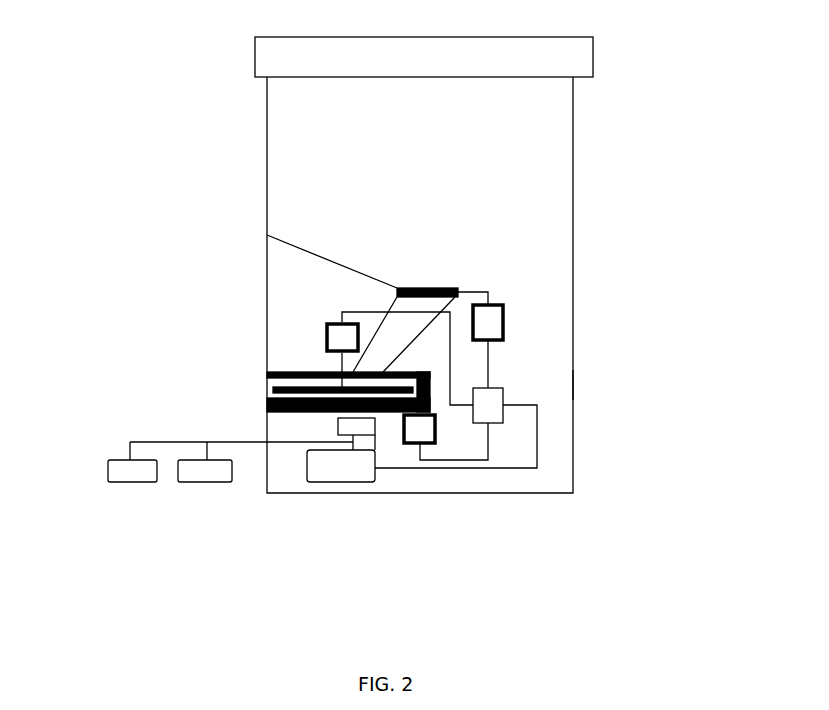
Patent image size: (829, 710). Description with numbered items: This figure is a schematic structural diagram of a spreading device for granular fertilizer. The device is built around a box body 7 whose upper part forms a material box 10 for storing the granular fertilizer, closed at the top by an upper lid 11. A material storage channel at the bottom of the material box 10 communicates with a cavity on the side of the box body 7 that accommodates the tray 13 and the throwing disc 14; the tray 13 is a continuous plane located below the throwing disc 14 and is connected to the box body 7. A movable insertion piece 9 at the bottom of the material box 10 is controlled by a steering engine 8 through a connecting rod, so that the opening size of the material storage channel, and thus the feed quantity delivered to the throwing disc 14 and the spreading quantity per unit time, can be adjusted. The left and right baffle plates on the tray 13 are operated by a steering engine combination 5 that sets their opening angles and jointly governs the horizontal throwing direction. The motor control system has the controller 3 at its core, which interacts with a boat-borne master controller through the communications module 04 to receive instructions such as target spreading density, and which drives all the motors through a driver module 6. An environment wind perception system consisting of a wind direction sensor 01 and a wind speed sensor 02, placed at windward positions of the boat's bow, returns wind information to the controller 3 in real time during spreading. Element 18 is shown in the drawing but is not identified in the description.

The upper lid 11 is at (476, 57).
The material box 10 is at (482, 285).
The insertion piece 9 is at (520, 280).
The steering engine 8 is at (580, 290).
The box body 7 is at (630, 352).
The driver module 6 is at (532, 479).
The steering engine combination 5 is at (456, 492).
The communications module 04 is at (387, 494).
The controller 3 is at (307, 510).
The wind direction sensor 01 is at (103, 515).
The wind speed sensor 02 is at (175, 515).
The temperature sensor 18 is at (279, 287).
The tray 13 is at (315, 347).
The throwing disc 14 is at (307, 364).